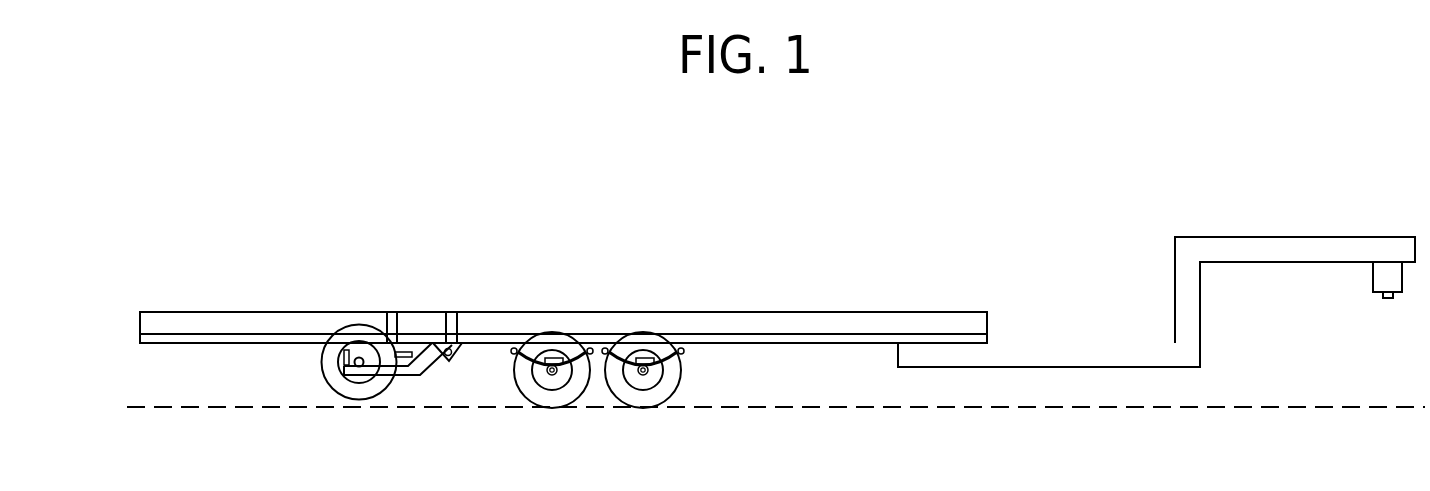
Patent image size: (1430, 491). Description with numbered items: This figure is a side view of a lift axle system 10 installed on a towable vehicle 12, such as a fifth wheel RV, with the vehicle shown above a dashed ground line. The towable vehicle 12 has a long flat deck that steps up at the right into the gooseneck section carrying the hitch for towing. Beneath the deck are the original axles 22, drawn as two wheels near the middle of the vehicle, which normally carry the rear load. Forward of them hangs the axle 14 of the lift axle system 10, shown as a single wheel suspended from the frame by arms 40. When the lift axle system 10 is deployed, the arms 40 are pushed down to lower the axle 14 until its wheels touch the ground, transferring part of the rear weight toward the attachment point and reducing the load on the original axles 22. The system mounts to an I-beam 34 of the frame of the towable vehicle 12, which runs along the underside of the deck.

The lift axle system 10 is at (776, 360).
The towable vehicle 12 is at (910, 290).
The axle 14 is at (358, 368).
The original axles 22 is at (640, 375).
The I-beam 34 is at (743, 343).
The arms 40 is at (438, 371).